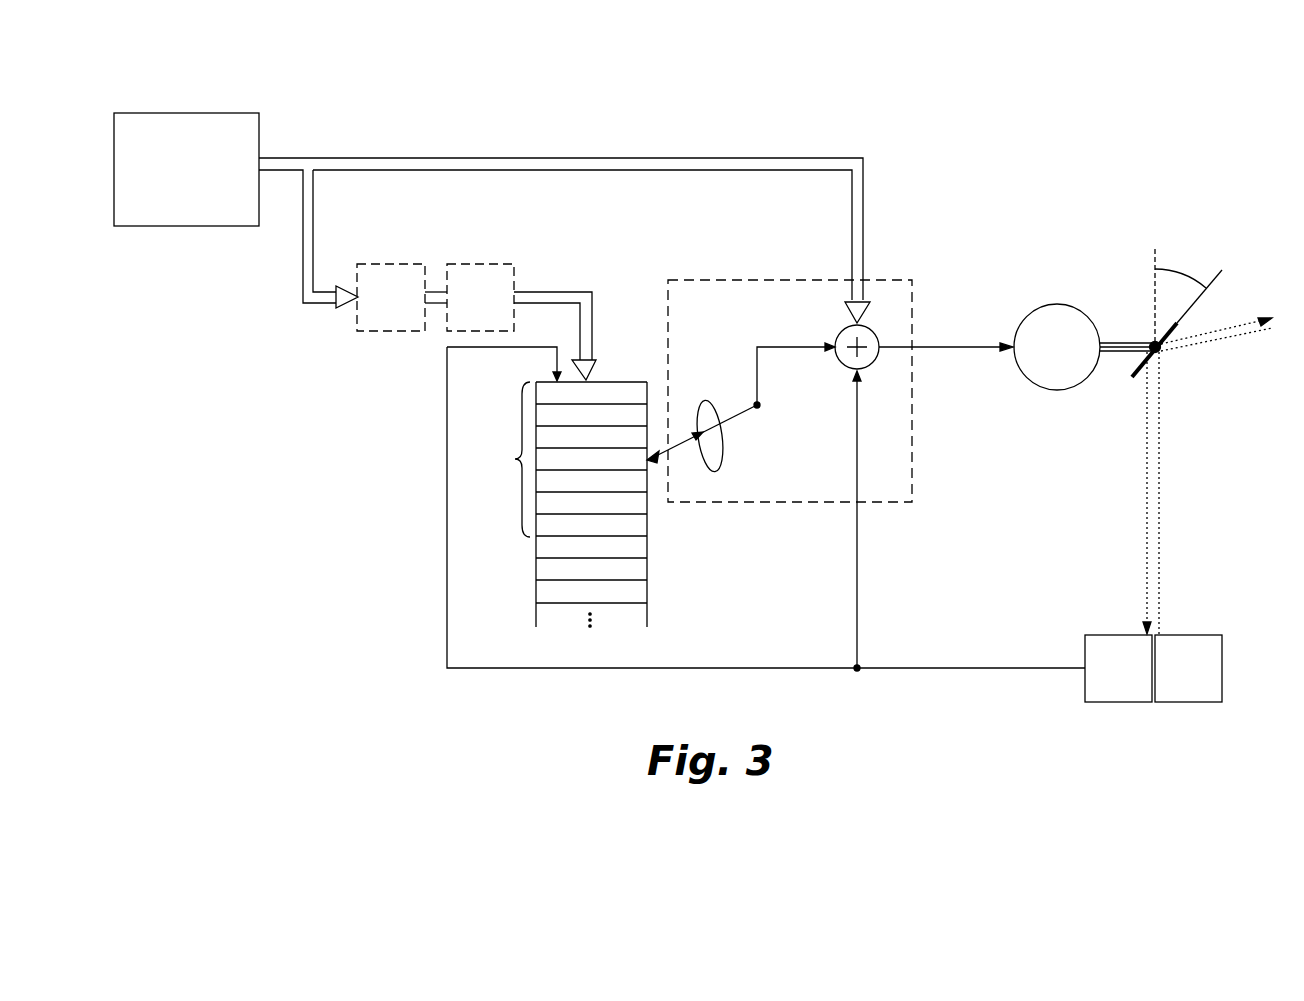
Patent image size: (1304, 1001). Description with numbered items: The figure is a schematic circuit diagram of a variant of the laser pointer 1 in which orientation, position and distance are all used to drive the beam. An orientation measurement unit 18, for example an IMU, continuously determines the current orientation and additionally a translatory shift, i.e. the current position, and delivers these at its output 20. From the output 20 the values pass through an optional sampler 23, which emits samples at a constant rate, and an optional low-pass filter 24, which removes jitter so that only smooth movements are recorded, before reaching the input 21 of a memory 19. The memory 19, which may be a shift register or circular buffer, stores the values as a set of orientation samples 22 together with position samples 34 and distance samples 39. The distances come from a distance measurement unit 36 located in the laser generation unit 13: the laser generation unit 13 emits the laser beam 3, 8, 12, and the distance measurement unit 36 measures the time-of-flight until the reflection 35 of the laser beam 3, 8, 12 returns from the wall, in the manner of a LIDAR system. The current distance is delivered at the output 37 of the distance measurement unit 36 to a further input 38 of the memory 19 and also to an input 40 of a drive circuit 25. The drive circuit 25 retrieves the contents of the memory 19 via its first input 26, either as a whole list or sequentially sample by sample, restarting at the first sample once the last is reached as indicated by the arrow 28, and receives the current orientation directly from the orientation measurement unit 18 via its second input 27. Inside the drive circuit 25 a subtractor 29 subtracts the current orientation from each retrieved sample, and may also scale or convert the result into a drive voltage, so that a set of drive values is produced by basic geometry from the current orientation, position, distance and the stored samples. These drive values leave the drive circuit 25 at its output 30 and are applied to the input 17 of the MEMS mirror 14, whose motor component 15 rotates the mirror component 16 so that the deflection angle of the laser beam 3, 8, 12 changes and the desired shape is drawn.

The laser pointer 1 is at (1162, 168).
The laser beam 3 is at (1209, 493).
The laser beam 8 is at (1209, 493).
The laser beam 12 is at (1160, 450).
The laser generation unit 13 is at (1223, 653).
The MEMS mirror 14 is at (1106, 277).
The motor component 15 is at (1053, 392).
The mirror component 16 is at (1133, 377).
The input of the MEMS mirror 17 is at (1012, 347).
The orientation measurement unit 18 is at (172, 113).
The memory 19 is at (508, 563).
The output of the orientation measurement unit 20 is at (262, 156).
The input of the memory 21 is at (588, 380).
The orientation samples 22 is at (626, 504).
The sampler 23 is at (390, 262).
The low-pass filter 24 is at (478, 263).
The drive circuit 25 is at (742, 280).
The first input of the drive circuit 26 is at (670, 453).
The second input of the drive circuit 27 is at (863, 280).
The arrow 28 is at (725, 443).
The subtractor 29 is at (840, 363).
The output of the drive circuit 30 is at (915, 352).
The position samples 34 is at (626, 504).
The reflection of the laser beam 35 is at (1147, 493).
The distance measurement unit 36 is at (1004, 661).
The output of the distance measurement unit 37 is at (1083, 650).
The input of the memory 38 is at (555, 380).
The distance samples 39 is at (647, 505).
The input of the drive circuit 40 is at (860, 503).